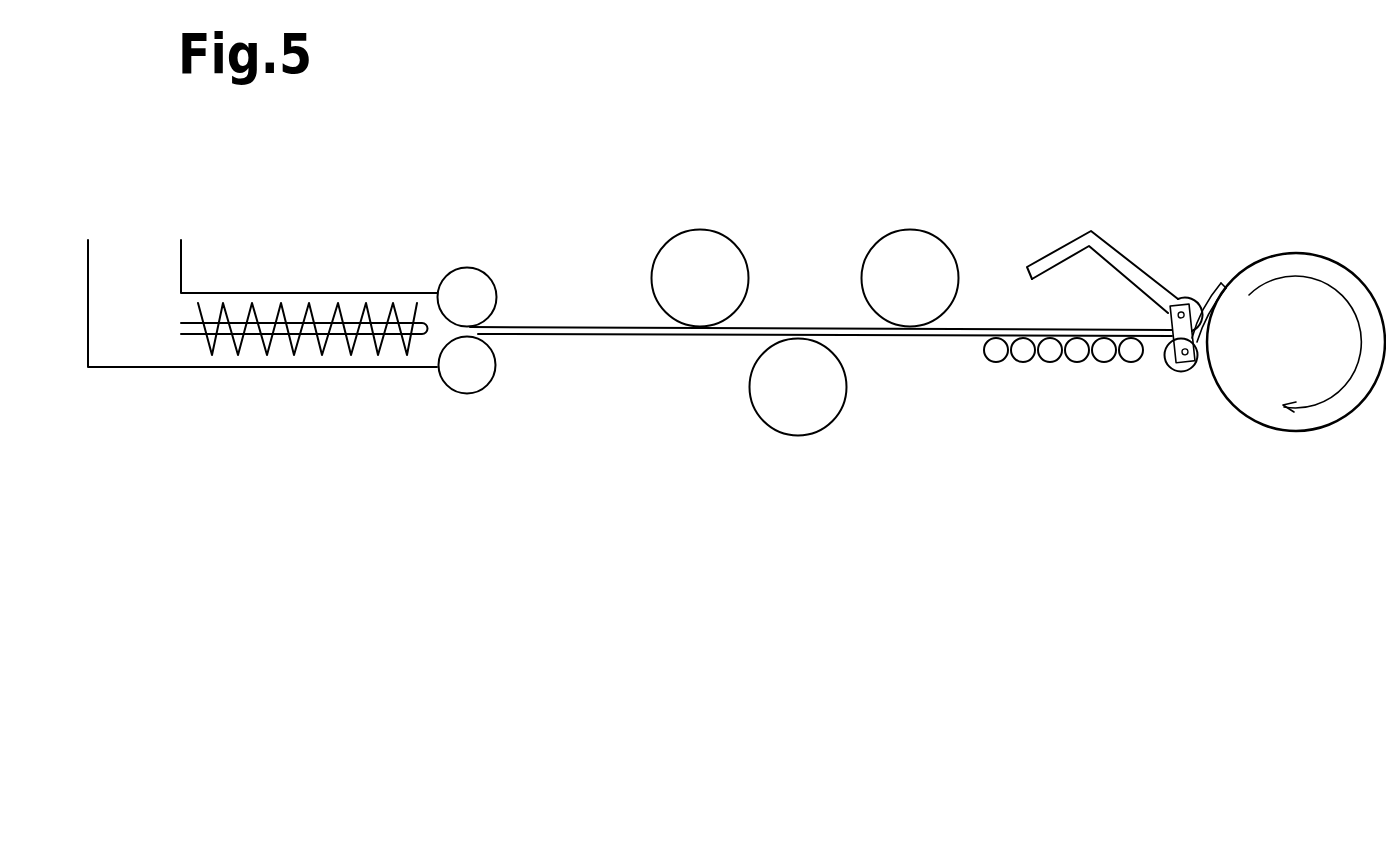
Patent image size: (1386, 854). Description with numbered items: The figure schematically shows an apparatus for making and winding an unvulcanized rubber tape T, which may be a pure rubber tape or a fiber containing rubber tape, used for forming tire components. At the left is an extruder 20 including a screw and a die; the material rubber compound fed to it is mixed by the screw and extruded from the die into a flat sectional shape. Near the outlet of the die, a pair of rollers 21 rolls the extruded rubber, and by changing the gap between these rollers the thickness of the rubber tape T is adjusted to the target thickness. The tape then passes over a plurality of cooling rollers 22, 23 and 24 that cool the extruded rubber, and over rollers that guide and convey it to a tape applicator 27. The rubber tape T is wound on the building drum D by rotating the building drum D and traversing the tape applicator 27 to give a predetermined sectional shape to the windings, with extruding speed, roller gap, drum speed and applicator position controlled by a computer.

The extruder 20 is at (294, 278).
The pair of rollers 21 is at (472, 282).
The cooling roller 22 is at (706, 243).
The cooling roller 23 is at (797, 420).
The cooling roller 24 is at (908, 242).
The tape applicator 27 is at (1133, 245).
The unvulcanized rubber tape T is at (578, 318).
The building drum D is at (1310, 253).